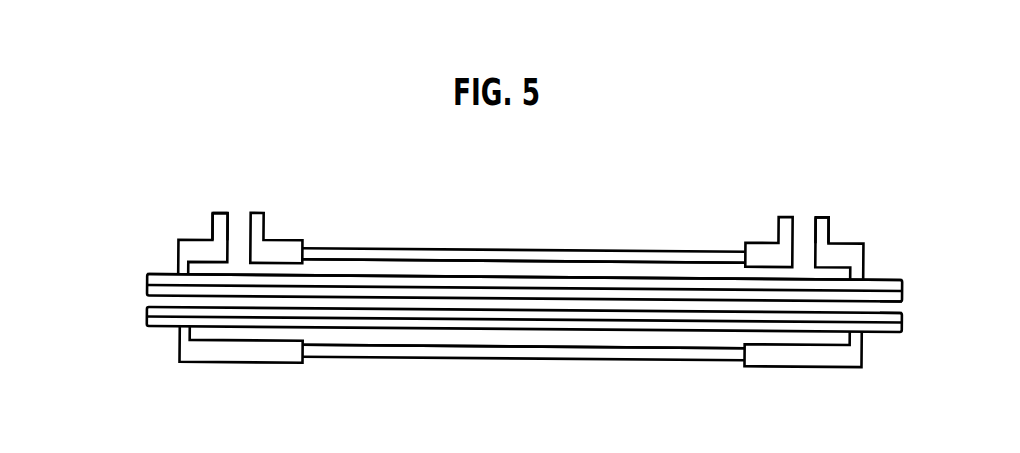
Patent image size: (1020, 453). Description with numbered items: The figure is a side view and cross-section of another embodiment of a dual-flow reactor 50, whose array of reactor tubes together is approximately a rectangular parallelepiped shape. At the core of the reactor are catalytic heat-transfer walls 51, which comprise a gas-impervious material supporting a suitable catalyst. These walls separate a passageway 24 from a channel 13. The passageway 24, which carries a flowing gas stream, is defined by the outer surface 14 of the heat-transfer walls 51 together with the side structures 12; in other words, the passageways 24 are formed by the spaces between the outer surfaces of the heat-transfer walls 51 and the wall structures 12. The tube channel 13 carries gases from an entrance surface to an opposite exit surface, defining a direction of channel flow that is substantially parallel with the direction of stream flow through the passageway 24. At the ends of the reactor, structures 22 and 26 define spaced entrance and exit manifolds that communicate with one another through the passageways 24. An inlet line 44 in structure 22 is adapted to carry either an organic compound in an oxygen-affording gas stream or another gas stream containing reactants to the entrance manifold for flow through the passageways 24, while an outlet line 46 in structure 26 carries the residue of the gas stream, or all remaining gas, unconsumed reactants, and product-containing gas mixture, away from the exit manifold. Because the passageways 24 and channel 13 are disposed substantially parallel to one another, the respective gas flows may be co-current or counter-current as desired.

The side structures 12 is at (355, 250).
The channel 13 is at (903, 306).
The outer surface 14 is at (613, 277).
The structure 22 is at (850, 243).
The passageway 24 is at (483, 270).
The structure 26 is at (178, 251).
The inlet line 44 is at (822, 215).
The outlet line 46 is at (218, 215).
The dual-flow reactor 50 is at (420, 367).
The catalytic heat-transfer walls 51 is at (147, 285).